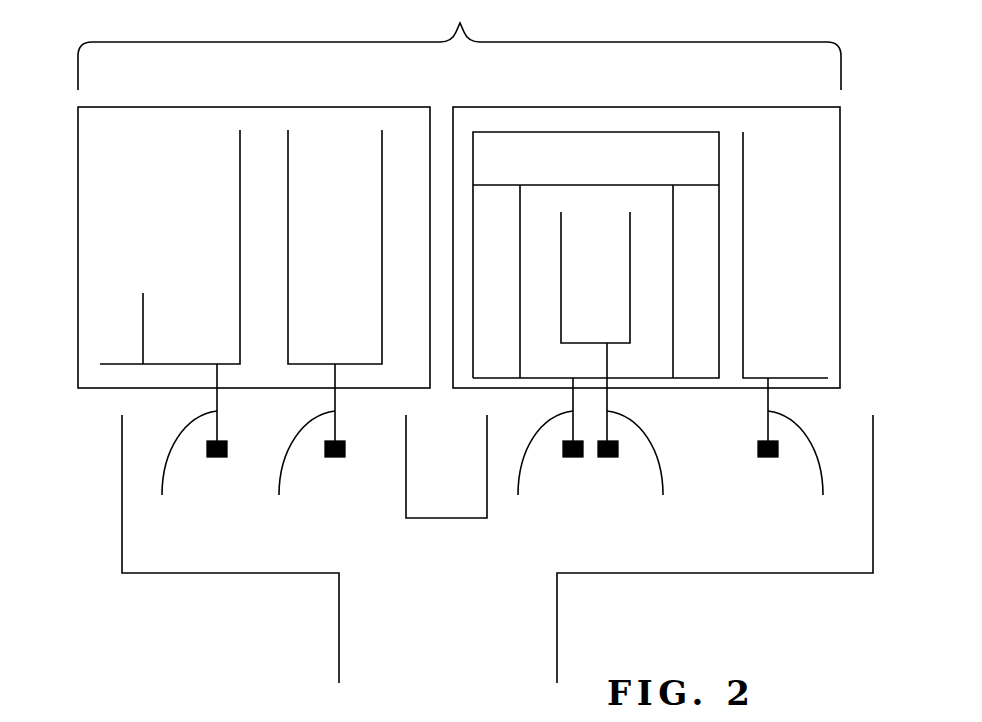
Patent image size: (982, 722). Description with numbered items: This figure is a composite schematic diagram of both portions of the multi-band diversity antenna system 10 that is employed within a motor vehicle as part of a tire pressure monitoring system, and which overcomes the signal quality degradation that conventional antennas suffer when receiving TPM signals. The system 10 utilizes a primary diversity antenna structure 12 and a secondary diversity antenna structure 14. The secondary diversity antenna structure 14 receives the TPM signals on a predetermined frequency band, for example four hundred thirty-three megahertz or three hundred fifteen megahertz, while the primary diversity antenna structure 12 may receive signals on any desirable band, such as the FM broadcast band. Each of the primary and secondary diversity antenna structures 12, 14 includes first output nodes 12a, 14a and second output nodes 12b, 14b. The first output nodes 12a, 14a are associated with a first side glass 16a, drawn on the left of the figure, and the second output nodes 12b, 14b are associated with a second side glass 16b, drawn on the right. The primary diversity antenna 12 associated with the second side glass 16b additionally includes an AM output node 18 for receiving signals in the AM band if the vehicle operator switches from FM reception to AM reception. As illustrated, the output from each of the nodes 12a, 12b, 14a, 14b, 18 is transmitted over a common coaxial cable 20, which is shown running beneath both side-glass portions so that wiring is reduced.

The multi-band diversity antenna system 10 is at (459, 45).
The primary diversity antenna structure 12 is at (334, 219).
The secondary diversity antenna structure 14 is at (188, 316).
The first side glass 16a is at (88, 195).
The second side glass 16b is at (832, 220).
The first output node 14a is at (195, 446).
The first output node 12a is at (309, 446).
The AM output node 18 is at (545, 453).
The second output node 12b is at (642, 436).
The second output node 14b is at (793, 453).
The common coaxial cable 20 is at (357, 630).